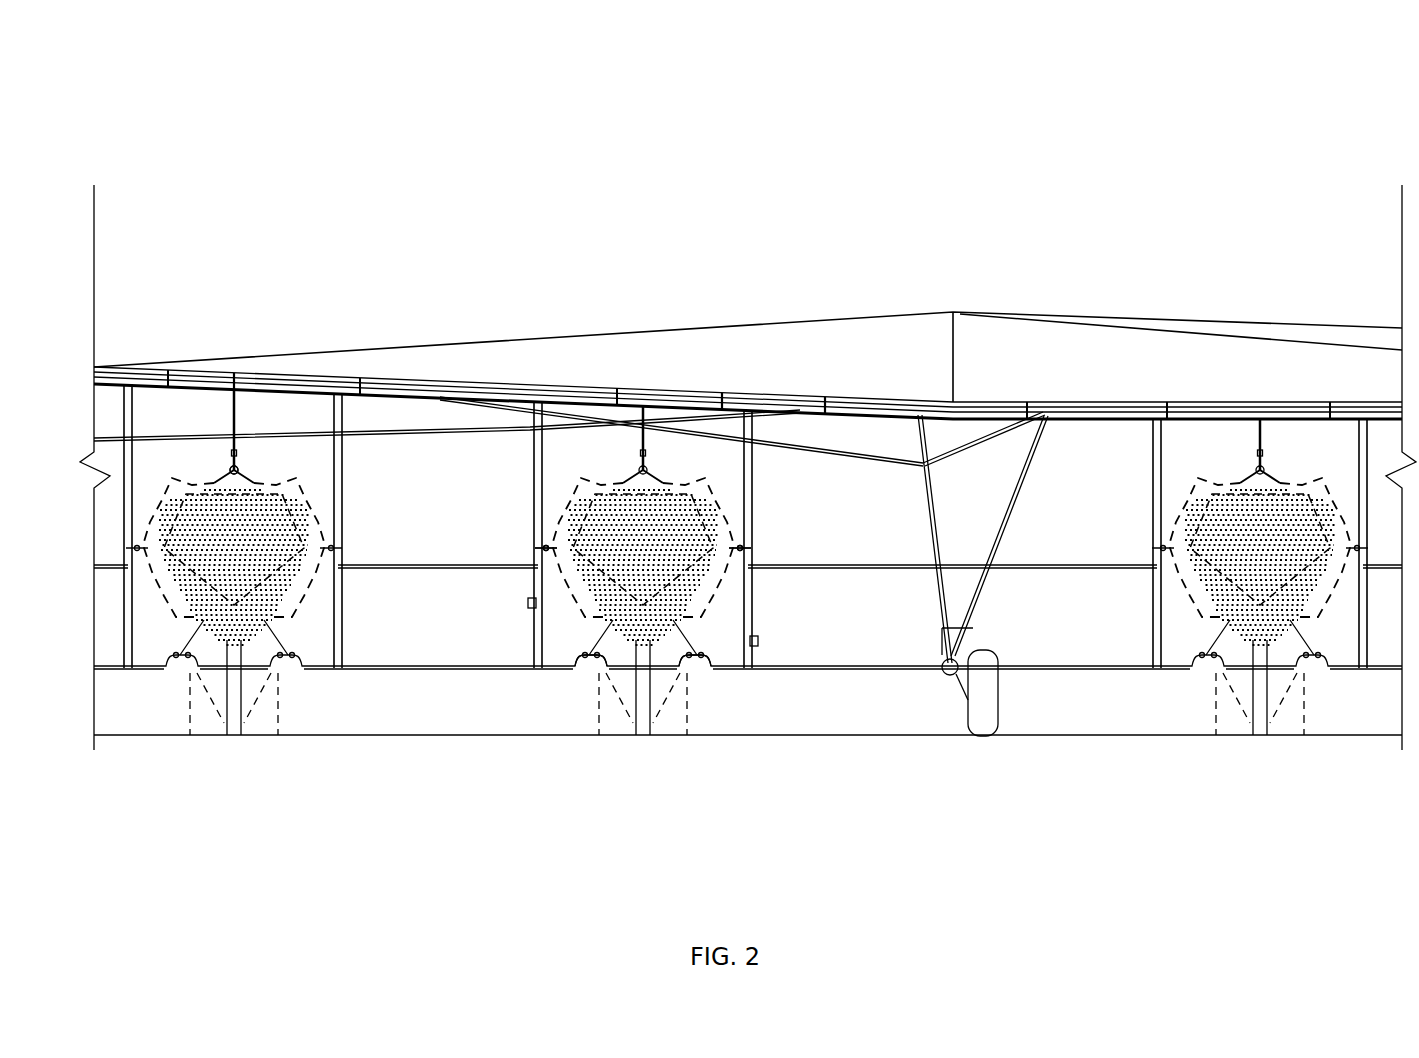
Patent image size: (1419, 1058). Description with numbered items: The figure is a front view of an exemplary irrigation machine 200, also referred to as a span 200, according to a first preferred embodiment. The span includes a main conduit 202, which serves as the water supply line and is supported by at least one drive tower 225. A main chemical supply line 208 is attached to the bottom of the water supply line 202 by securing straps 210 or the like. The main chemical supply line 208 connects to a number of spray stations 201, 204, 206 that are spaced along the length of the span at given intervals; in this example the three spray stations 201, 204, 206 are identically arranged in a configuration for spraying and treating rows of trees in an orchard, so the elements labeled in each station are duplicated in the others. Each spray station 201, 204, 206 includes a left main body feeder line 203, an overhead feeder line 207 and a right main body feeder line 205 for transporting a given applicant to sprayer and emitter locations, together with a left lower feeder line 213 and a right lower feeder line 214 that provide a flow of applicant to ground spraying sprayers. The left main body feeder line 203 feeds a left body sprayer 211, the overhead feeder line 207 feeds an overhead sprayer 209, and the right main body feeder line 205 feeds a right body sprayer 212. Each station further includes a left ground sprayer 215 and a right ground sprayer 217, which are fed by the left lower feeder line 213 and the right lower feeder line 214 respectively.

The irrigation machine 200 is at (916, 119).
The spray station 201 is at (138, 610).
The main conduit 202 is at (668, 390).
The left main body feeder line 203 is at (137, 477).
The spray station 204 is at (593, 436).
The right main body feeder line 205 is at (340, 495).
The spray station 206 is at (1219, 462).
The overhead feeder line 207 is at (238, 412).
The main chemical supply line 208 is at (235, 390).
The overhead sprayer 209 is at (238, 468).
The securing straps 210 is at (828, 405).
The left body sprayer 211 is at (555, 563).
The right body sprayer 212 is at (748, 553).
The left lower feeder line 213 is at (527, 603).
The right lower feeder line 214 is at (758, 640).
The left ground sprayer 215 is at (592, 668).
The right ground sprayer 217 is at (688, 670).
The drive tower 225 is at (1022, 500).